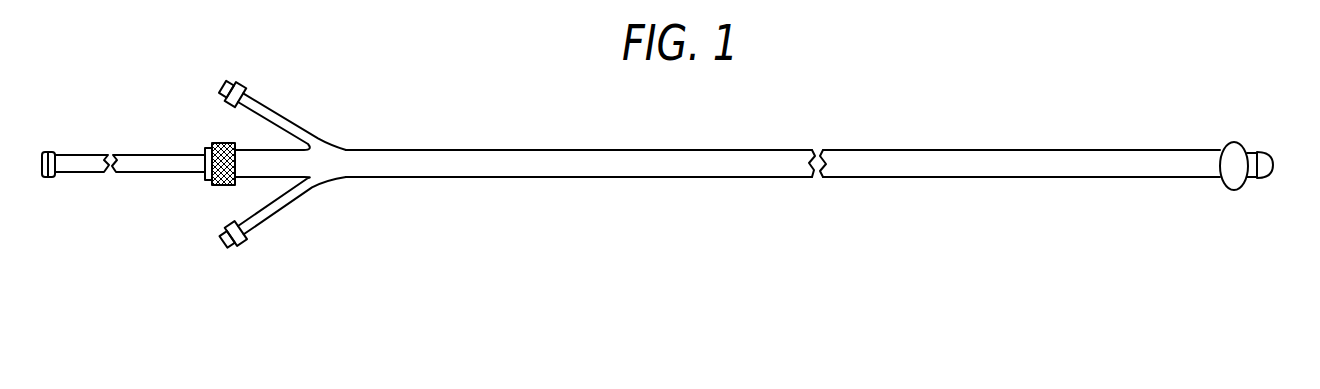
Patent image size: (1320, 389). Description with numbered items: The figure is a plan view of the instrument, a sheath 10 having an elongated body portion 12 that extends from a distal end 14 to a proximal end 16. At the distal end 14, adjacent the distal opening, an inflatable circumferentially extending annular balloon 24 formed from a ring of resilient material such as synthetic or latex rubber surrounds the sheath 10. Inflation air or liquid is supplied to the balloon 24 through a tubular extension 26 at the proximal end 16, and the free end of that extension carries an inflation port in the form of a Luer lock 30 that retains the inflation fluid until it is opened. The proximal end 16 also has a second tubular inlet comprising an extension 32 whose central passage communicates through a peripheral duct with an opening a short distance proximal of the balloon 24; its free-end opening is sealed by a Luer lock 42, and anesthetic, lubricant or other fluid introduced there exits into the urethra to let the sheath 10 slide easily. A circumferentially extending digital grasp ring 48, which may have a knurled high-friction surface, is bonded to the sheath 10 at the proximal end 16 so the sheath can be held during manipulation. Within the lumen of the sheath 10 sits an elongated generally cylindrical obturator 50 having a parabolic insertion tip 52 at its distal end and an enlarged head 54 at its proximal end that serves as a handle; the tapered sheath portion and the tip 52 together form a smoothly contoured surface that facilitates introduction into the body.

The sheath 10 is at (502, 132).
The elongated body portion 12 is at (695, 168).
The distal end 14 is at (1198, 148).
The proximal end 16 is at (257, 148).
The inflatable annular balloon 24 is at (1236, 143).
The tubular extension 26 is at (282, 108).
The Luer lock 30 is at (235, 82).
The extension 32 is at (293, 197).
The Luer lock 42 is at (235, 250).
The digital grasp ring 48 is at (218, 145).
The obturator 50 is at (152, 173).
The parabolic insertion tip 52 is at (1270, 172).
The enlarged head 54 is at (45, 178).